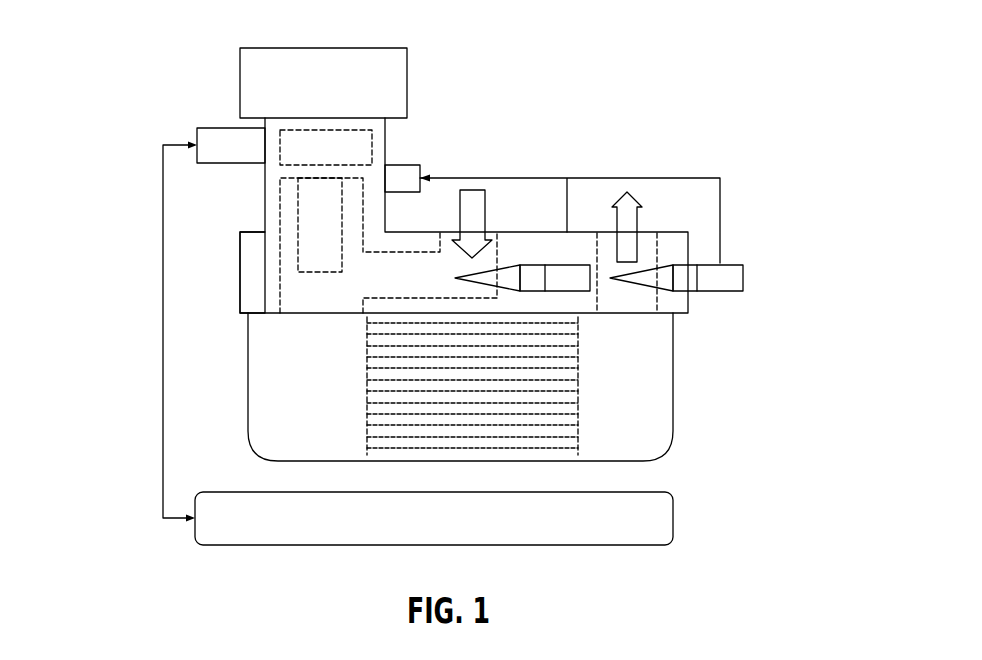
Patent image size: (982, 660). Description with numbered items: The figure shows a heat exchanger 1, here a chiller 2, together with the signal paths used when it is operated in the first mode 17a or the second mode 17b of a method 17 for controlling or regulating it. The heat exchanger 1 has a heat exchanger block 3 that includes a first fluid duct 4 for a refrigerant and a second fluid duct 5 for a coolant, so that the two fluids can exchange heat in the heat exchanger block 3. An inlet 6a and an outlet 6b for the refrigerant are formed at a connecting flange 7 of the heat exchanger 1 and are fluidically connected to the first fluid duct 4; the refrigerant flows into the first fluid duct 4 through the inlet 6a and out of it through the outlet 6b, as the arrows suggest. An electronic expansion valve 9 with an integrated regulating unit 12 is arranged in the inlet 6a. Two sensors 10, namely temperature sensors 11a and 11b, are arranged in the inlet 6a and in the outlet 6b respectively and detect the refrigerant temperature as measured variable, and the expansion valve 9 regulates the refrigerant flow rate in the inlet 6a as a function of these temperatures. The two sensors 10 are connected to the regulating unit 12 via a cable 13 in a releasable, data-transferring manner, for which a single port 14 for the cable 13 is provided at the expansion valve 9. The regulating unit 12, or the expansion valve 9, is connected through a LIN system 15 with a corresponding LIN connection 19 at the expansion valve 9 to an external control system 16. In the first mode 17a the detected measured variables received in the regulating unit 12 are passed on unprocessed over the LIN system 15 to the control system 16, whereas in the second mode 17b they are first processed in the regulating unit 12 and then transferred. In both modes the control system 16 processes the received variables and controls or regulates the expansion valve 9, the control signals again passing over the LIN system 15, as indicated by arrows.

The heat exchanger 1 is at (476, 160).
The chiller 2 is at (476, 160).
The heat exchanger block 3 is at (501, 381).
The first fluid duct 4 is at (560, 378).
The second fluid duct 5 is at (552, 447).
The inlet 6a is at (581, 201).
The outlet 6b is at (723, 225).
The connecting flange 7 is at (258, 267).
The electronic expansion valve 9 is at (386, 87).
The sensors 10 is at (613, 201).
The temperature sensor 11a is at (613, 201).
The temperature sensor 11b is at (726, 278).
The regulating unit 12 is at (348, 147).
The cable 13 is at (502, 178).
The port 14 is at (402, 174).
The LIN system 15 is at (163, 348).
The external control system 16 is at (643, 520).
The method 17 is at (750, 29).
The first mode 17a is at (780, 29).
The second mode 17b is at (814, 29).
The LIN connection 19 is at (231, 136).